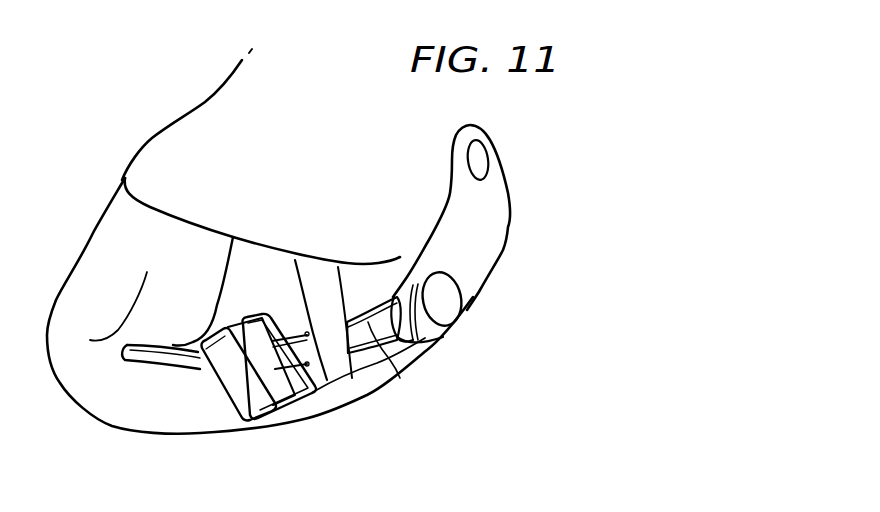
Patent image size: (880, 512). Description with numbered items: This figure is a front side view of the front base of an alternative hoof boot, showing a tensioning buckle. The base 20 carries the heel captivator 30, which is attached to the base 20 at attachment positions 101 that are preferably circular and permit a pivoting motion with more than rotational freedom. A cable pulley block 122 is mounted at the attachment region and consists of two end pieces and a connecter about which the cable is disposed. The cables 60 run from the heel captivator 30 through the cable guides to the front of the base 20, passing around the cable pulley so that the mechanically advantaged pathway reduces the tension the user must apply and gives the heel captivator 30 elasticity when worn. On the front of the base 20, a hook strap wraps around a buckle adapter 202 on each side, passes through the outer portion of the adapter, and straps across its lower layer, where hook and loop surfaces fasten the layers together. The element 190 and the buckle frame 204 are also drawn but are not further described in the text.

The base 20 is at (108, 198).
The heel captivator 30 is at (507, 237).
The cables 60 is at (167, 363).
The attachment positions 101 is at (457, 281).
The cable pulley block 122 is at (447, 303).
The housing base 190 is at (430, 337).
The buckle adapter 202 is at (230, 413).
The buckle frame 204 is at (293, 410).